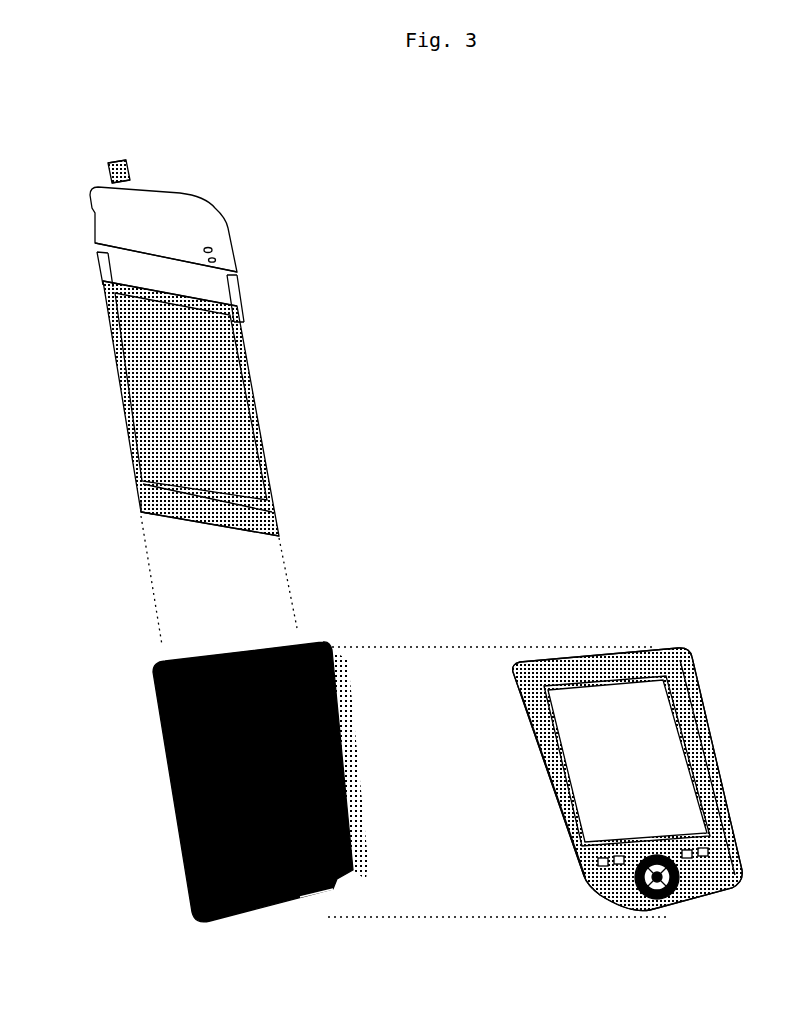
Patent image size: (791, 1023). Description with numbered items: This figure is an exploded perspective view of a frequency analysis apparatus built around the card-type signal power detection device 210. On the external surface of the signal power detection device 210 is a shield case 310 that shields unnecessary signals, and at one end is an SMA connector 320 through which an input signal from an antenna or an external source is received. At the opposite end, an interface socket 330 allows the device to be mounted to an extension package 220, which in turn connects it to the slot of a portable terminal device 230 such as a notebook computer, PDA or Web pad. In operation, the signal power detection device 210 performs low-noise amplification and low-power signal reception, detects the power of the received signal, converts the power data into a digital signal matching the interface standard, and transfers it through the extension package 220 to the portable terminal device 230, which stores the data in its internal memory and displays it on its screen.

The signal power detection device 210 is at (270, 338).
The shield case 310 is at (268, 443).
The SMA connector 320 is at (128, 168).
The interface socket 330 is at (141, 512).
The extension package 220 is at (152, 782).
The portable terminal device 230 is at (606, 628).